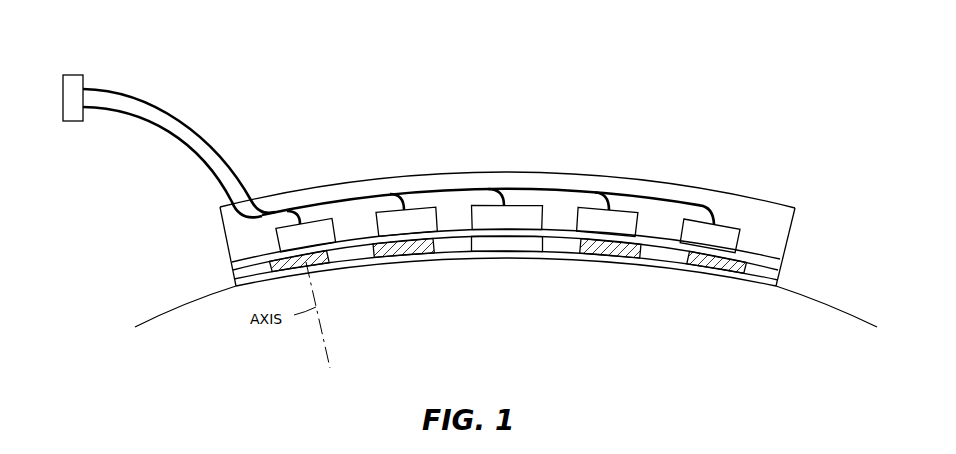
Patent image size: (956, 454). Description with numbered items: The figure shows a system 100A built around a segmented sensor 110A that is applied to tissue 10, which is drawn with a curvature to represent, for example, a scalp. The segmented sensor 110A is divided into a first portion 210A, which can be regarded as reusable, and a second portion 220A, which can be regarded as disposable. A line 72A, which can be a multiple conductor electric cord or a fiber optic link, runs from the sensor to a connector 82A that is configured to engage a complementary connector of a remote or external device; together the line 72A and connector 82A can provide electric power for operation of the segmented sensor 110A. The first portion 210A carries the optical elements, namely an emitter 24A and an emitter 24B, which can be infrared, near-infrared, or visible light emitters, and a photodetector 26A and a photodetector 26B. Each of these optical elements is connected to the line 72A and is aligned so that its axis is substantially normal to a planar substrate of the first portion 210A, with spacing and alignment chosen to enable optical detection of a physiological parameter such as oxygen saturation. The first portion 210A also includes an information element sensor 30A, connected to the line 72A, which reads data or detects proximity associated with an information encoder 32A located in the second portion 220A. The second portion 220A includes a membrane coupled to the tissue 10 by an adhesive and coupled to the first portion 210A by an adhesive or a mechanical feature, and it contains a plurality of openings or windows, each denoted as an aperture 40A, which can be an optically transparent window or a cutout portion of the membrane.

The system 100A is at (753, 58).
The connector 82A is at (74, 74).
The line 72A is at (187, 118).
The segmented sensor 110A is at (216, 210).
The first portion 210A is at (764, 221).
The second portion 220A is at (753, 269).
The emitter 24A is at (316, 219).
The emitter 24B is at (723, 222).
The photodetector 26A is at (420, 208).
The photodetector 26B is at (624, 209).
The information element sensor 30A is at (521, 207).
The information encoder 32A is at (508, 240).
The aperture 40A is at (324, 257).
The tissue 10 is at (813, 304).